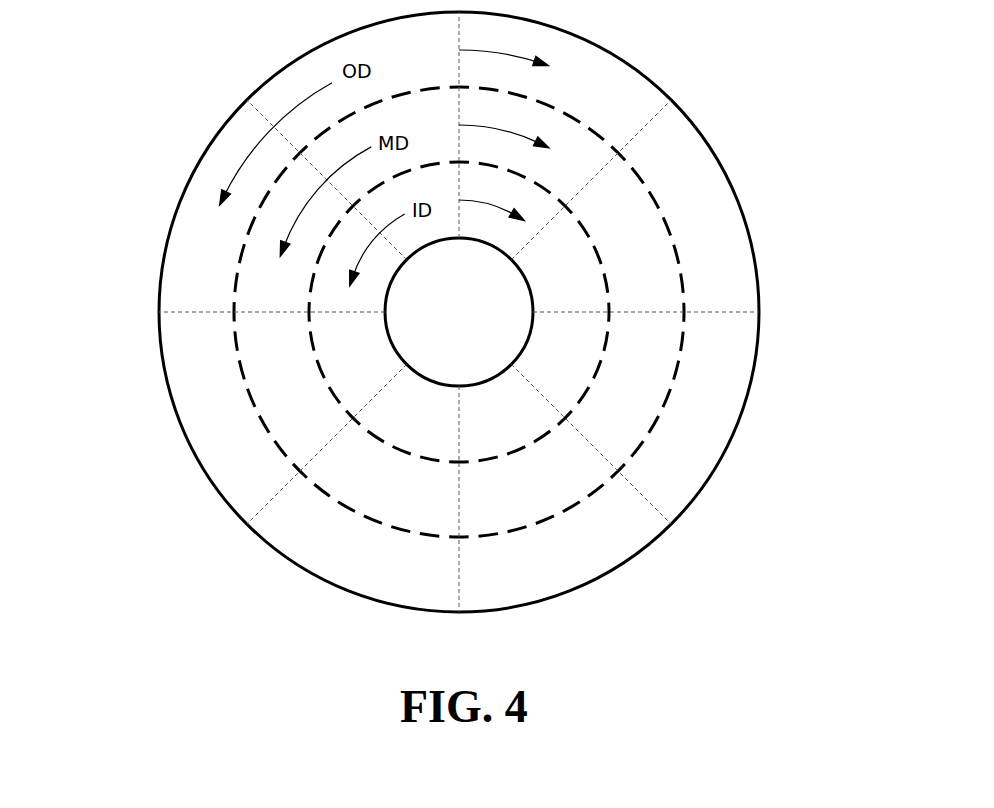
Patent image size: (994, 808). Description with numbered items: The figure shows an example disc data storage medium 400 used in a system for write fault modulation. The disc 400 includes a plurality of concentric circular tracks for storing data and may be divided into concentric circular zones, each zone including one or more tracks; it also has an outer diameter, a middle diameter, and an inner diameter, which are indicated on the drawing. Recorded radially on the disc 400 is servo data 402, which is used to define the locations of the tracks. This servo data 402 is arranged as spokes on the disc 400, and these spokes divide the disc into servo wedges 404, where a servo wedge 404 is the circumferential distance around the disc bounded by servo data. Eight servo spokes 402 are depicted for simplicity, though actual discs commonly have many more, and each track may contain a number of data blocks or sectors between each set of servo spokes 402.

The disc data storage medium 400 is at (150, 87).
The servo data 402 is at (645, 125).
The servo wedge 404 is at (628, 238).